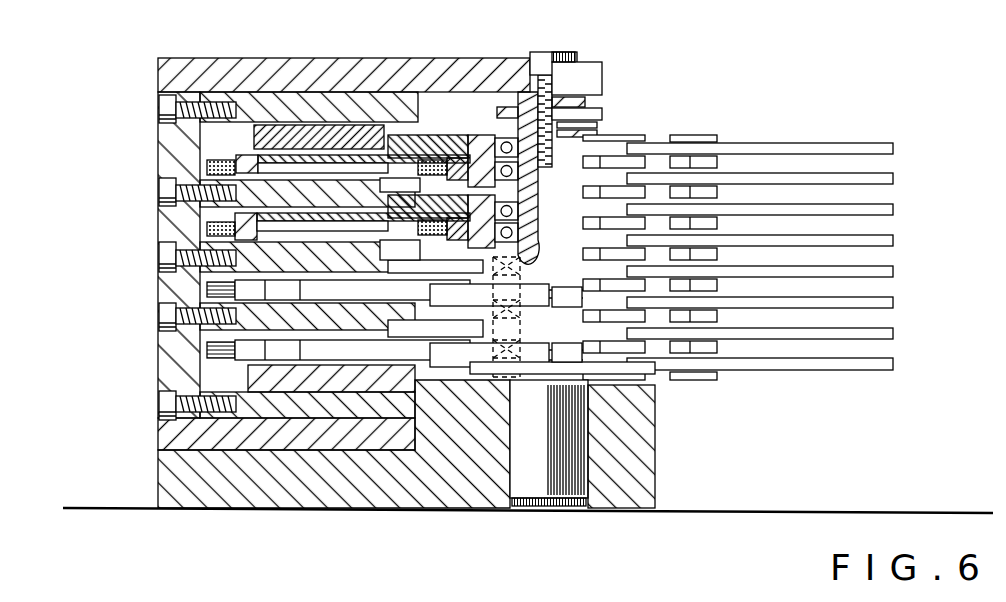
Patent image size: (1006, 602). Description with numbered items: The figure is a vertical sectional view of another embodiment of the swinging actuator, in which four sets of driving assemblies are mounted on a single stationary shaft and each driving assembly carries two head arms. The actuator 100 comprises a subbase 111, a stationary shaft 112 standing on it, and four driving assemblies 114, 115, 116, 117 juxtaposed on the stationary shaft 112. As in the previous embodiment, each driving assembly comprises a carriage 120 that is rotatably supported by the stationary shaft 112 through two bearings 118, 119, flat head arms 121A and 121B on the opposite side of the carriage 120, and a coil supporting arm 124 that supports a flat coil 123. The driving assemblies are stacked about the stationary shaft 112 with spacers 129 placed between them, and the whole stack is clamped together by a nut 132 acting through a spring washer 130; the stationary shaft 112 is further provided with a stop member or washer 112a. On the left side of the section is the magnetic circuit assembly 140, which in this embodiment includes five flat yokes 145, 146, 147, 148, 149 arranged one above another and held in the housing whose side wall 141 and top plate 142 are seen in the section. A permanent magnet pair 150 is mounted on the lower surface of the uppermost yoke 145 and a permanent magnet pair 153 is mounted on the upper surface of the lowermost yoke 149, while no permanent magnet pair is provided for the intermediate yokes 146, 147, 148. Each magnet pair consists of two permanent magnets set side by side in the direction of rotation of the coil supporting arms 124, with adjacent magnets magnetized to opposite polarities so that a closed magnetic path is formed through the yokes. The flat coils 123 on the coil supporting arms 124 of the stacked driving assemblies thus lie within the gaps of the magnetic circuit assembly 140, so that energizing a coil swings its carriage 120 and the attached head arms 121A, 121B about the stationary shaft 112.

The actuator 100 is at (820, 75).
The subbase 111 is at (343, 492).
The stationary shaft 112 is at (548, 490).
The stop member 112a is at (655, 442).
The driving assembly 114 is at (662, 145).
The driving assembly 115 is at (668, 157).
The driving assembly 116 is at (575, 297).
The driving assembly 117 is at (573, 358).
The bearing 118 is at (493, 130).
The bearing 119 is at (528, 172).
The carriage 120 is at (610, 120).
The flat head arm 121A is at (895, 150).
The flat head arm 121B is at (895, 180).
The flat coil 123 is at (205, 165).
The coil supporting arm 124 is at (410, 205).
The spacer 129 is at (528, 190).
The spring washer 130 is at (575, 112).
The nut 132 is at (600, 86).
The magnetic circuit assembly 140 is at (134, 79).
The side wall 141 is at (168, 374).
The top plate 142 is at (315, 70).
The uppermost yoke 145 is at (250, 102).
The yoke 146 is at (240, 182).
The yoke 147 is at (255, 264).
The yoke 148 is at (255, 332).
The lowermost yoke 149 is at (248, 405).
The permanent magnet pair 150 is at (287, 135).
The permanent magnet pair 153 is at (300, 430).